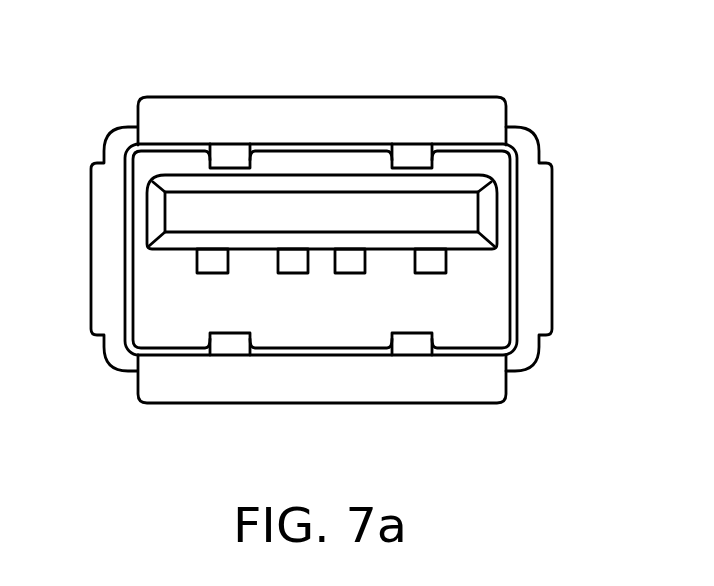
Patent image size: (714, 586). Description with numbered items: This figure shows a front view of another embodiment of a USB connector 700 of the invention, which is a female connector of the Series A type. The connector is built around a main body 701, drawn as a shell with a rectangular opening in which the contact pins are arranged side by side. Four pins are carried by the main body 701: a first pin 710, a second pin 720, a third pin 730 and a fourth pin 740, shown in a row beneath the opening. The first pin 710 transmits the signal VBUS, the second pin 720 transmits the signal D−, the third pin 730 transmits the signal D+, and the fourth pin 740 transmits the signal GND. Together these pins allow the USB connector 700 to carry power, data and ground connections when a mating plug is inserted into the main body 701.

The USB connector 700 is at (99, 42).
The main body 701 is at (490, 111).
The first pin 710 is at (215, 265).
The second pin 720 is at (294, 265).
The third pin 730 is at (348, 265).
The fourth pin 740 is at (428, 265).